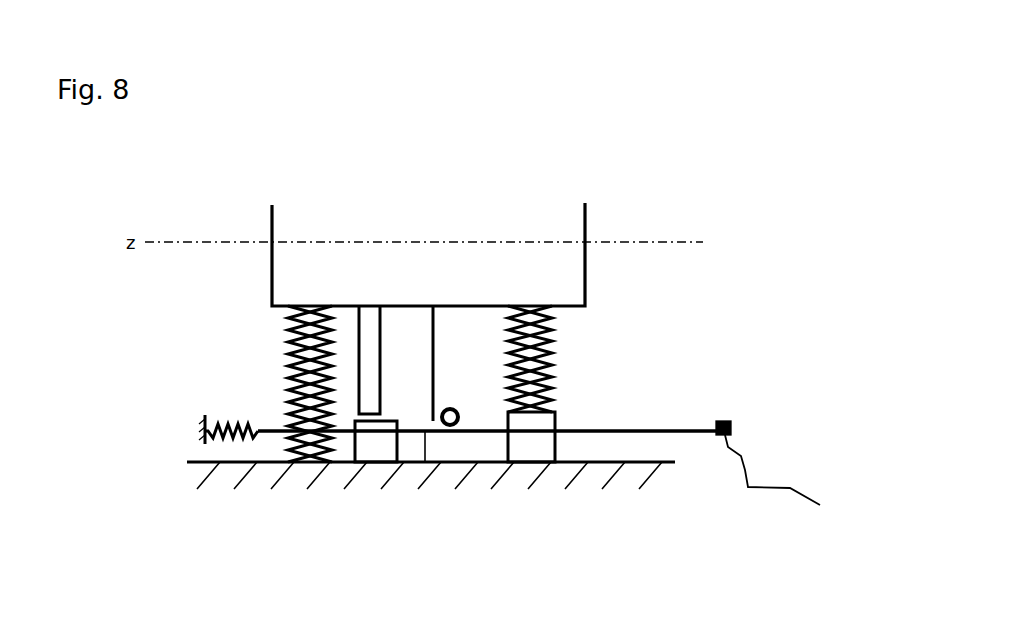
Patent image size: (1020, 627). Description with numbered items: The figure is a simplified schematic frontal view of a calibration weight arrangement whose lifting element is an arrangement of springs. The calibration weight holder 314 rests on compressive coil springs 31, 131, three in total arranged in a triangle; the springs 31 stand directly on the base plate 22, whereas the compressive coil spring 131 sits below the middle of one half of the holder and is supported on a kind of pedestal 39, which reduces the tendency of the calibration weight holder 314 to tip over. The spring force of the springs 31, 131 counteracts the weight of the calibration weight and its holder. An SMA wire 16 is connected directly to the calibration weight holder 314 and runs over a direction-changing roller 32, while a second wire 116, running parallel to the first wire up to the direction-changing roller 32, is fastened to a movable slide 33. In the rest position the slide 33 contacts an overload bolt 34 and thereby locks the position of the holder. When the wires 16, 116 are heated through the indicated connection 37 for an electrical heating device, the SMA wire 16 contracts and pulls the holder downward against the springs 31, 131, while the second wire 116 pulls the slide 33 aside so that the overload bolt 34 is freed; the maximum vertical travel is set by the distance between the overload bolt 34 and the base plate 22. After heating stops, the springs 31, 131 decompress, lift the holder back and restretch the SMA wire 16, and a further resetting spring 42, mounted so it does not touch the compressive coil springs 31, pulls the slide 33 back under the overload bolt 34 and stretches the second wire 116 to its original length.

The calibration weight holder 314 is at (497, 312).
The compressive coil springs 31 is at (286, 318).
The compressive coil spring 131 is at (556, 337).
The overload bolt 34 is at (372, 394).
The direction-changing roller 32 is at (452, 430).
The movable slide 33 is at (377, 445).
The pedestal 39 is at (535, 447).
The SMA wire 16 is at (603, 427).
The second wire 116 is at (425, 462).
The connection for an electrical heating device 37 is at (760, 487).
The resetting spring 42 is at (222, 437).
The base plate 22 is at (643, 481).